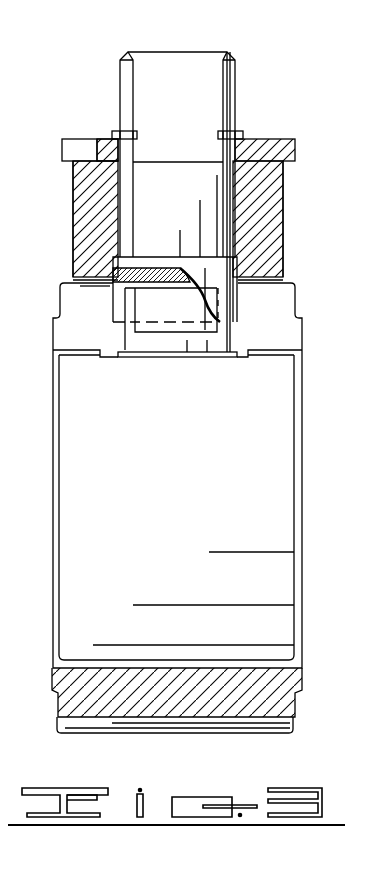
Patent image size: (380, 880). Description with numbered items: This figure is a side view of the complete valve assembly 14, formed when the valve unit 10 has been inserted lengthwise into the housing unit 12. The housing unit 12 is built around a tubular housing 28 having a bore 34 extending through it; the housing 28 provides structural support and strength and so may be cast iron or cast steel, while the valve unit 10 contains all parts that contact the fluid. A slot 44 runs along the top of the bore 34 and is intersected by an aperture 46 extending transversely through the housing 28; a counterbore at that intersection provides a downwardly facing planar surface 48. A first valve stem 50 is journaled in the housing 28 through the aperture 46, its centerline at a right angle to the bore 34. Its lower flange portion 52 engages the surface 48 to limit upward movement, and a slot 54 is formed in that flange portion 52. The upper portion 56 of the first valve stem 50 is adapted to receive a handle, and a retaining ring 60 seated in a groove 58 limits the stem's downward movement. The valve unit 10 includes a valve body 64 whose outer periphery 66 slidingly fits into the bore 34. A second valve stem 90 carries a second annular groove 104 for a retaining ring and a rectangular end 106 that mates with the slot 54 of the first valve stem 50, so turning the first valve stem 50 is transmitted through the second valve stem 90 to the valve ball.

The valve unit 10 is at (305, 447).
The housing unit 12 is at (285, 198).
The valve assembly 14 is at (303, 132).
The tubular housing 28 is at (268, 180).
The bore 34 is at (70, 665).
The slot 44 is at (89, 325).
The aperture 46 is at (120, 211).
The planar surface 48 is at (245, 257).
The first valve stem 50 is at (171, 188).
The lower flange portion 52 is at (220, 296).
The slot 54 is at (113, 292).
The upper portion 56 is at (213, 78).
The groove 58 is at (225, 130).
The retaining ring 60 is at (245, 134).
The valve body 64 is at (275, 572).
The outer periphery 66 is at (228, 637).
The second valve stem 90 is at (152, 342).
The second annular groove 104 is at (178, 355).
The rectangular end 106 is at (188, 315).